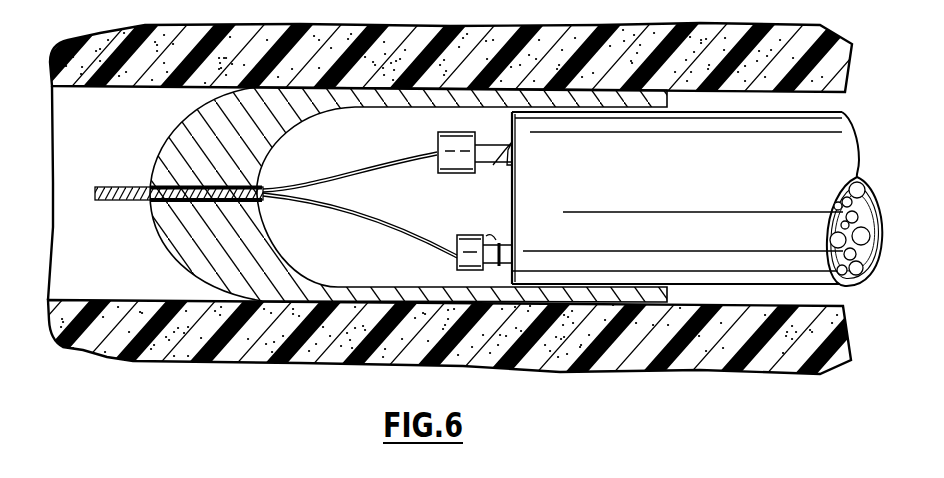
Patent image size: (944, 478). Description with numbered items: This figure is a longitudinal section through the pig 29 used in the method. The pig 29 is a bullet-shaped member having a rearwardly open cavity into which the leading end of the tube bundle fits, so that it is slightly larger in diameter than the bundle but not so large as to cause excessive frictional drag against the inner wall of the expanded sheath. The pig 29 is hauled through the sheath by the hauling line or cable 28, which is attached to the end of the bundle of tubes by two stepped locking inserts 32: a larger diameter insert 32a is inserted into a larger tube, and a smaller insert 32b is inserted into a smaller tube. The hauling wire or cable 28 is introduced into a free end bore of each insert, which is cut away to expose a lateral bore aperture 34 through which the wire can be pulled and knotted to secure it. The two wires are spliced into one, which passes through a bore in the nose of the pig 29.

The hauling line or cable 28 is at (173, 160).
The pig 29 is at (260, 126).
The stepped locking inserts 32 is at (387, 199).
The larger diameter insert 32a is at (452, 144).
The smaller insert 32b is at (457, 260).
The lateral bore aperture 34 is at (207, 185).